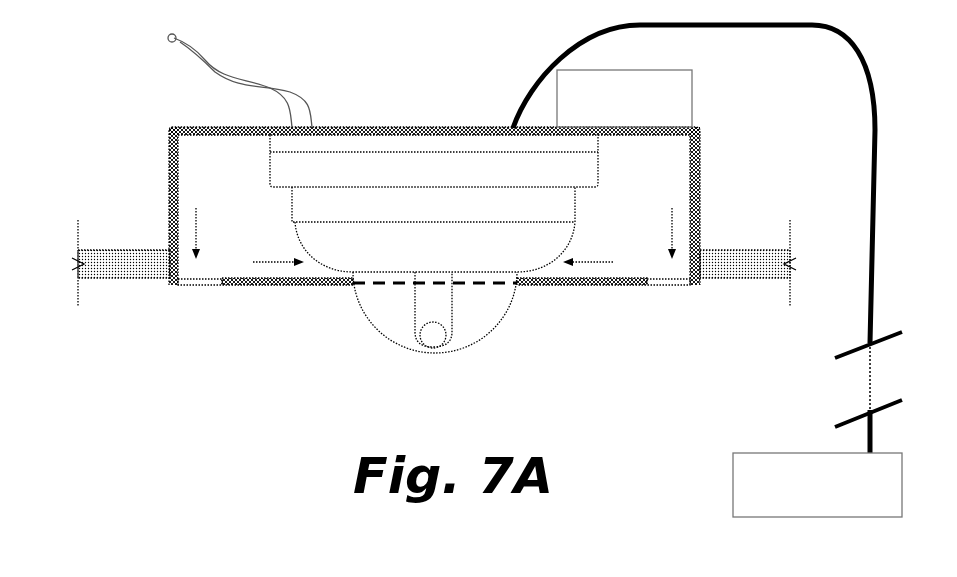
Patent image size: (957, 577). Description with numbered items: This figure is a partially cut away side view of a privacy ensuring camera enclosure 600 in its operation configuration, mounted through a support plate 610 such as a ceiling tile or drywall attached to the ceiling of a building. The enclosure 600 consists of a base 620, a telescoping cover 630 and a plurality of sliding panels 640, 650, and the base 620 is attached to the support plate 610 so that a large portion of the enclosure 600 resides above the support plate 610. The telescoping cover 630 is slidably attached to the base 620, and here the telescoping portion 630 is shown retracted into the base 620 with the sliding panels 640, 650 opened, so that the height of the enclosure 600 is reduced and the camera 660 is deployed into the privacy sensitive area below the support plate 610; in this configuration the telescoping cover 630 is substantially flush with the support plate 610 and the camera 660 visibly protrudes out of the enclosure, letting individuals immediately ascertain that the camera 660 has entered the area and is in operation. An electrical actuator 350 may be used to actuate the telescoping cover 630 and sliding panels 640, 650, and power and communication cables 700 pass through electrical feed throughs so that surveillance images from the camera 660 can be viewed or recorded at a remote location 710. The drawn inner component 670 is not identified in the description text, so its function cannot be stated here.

The privacy ensuring camera enclosure 600 is at (110, 116).
The support plate 610 is at (110, 258).
The base 620 is at (697, 155).
The telescoping cover 630 is at (672, 286).
The sliding panel 640 is at (563, 283).
The sliding panel 650 is at (247, 281).
The camera 660 is at (377, 310).
The inner block 670 is at (290, 160).
The power and communication cables 700 is at (230, 82).
The electrical actuator 350 is at (624, 98).
The remote location 710 is at (817, 485).